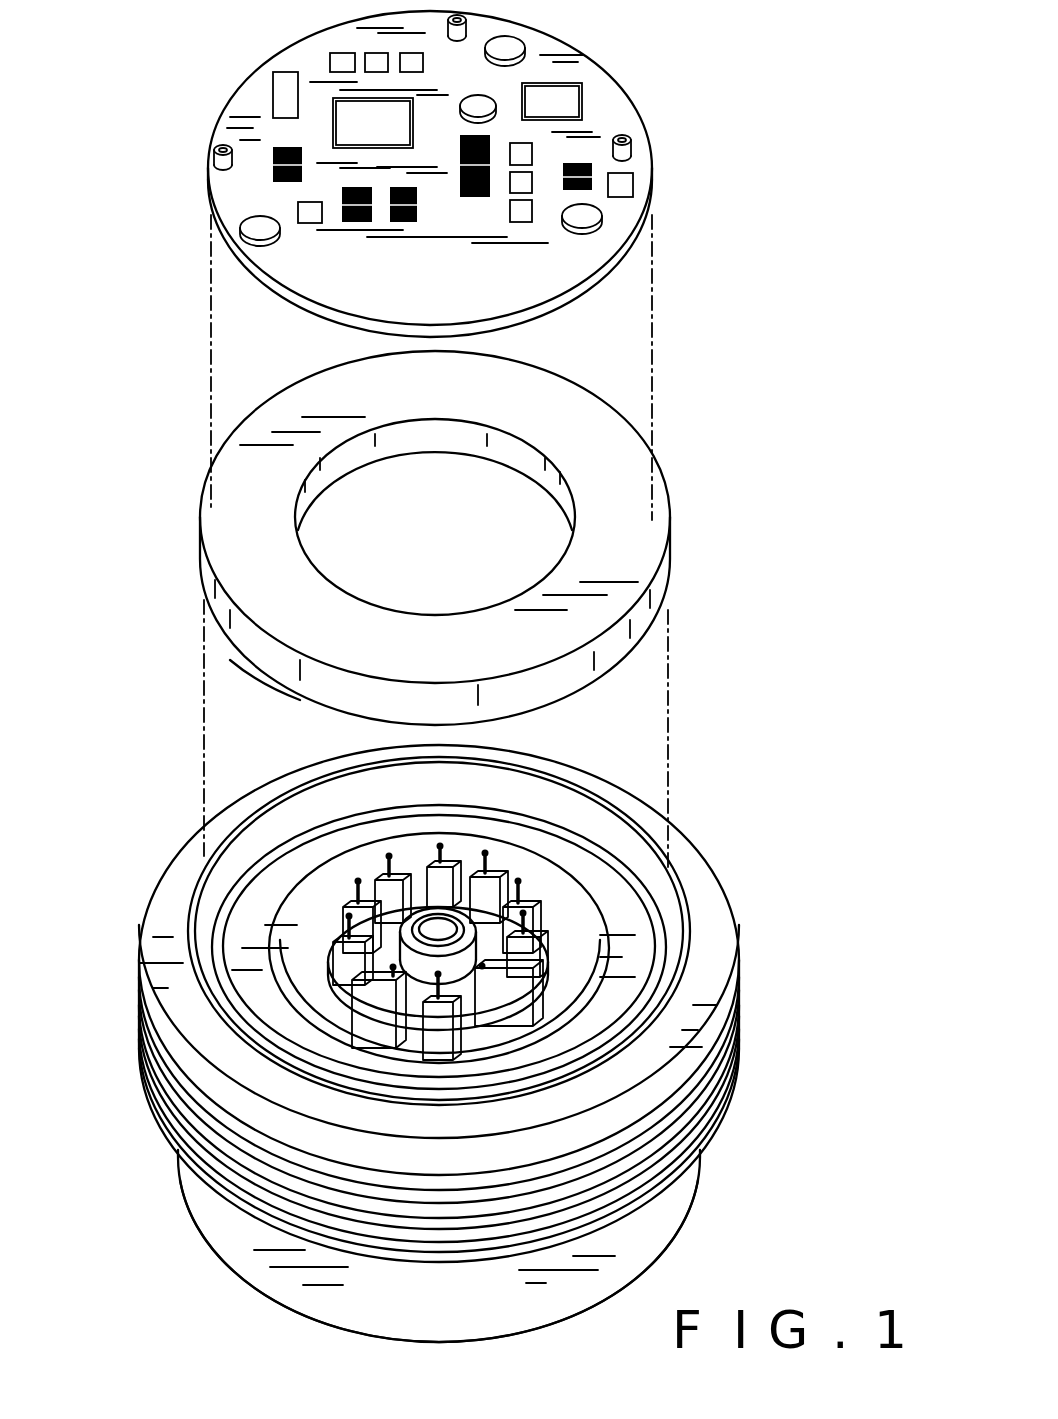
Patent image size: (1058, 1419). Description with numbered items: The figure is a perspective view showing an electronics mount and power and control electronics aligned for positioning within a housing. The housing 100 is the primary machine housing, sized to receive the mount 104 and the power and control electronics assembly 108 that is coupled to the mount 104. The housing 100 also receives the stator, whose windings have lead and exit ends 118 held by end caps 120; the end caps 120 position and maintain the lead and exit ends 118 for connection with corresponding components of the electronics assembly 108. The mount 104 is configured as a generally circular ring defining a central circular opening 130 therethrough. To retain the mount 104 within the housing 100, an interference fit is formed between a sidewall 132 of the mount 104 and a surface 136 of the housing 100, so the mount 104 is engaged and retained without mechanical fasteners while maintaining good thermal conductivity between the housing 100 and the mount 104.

The housing 100 is at (457, 1043).
The mount 104 is at (457, 538).
The power and control electronics assembly 108 is at (633, 97).
The lead and exit ends 118 is at (441, 848).
The end caps 120 is at (425, 1040).
The central circular opening 130 is at (483, 513).
The sidewall 132 is at (258, 642).
The surface 136 is at (326, 790).